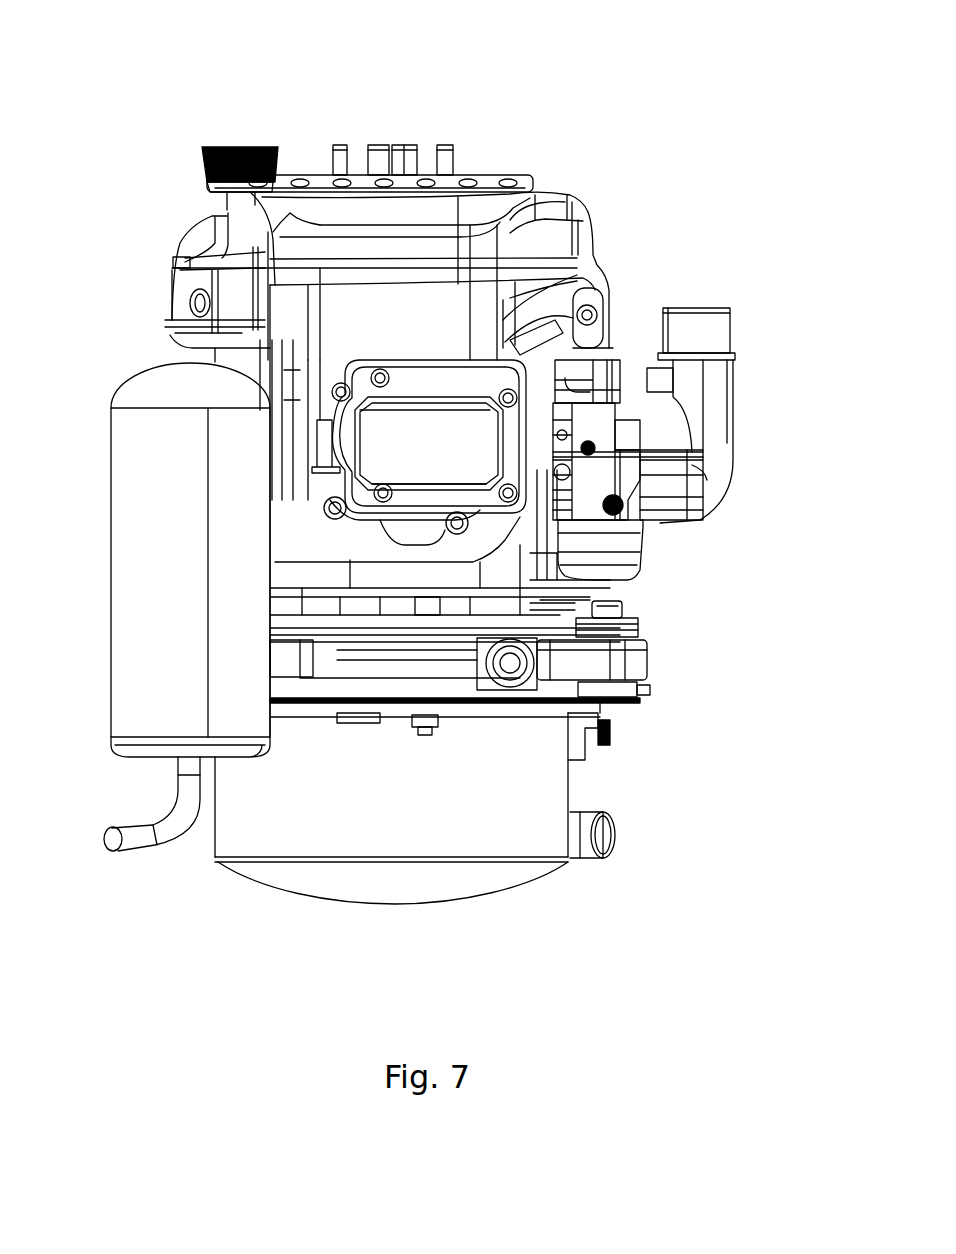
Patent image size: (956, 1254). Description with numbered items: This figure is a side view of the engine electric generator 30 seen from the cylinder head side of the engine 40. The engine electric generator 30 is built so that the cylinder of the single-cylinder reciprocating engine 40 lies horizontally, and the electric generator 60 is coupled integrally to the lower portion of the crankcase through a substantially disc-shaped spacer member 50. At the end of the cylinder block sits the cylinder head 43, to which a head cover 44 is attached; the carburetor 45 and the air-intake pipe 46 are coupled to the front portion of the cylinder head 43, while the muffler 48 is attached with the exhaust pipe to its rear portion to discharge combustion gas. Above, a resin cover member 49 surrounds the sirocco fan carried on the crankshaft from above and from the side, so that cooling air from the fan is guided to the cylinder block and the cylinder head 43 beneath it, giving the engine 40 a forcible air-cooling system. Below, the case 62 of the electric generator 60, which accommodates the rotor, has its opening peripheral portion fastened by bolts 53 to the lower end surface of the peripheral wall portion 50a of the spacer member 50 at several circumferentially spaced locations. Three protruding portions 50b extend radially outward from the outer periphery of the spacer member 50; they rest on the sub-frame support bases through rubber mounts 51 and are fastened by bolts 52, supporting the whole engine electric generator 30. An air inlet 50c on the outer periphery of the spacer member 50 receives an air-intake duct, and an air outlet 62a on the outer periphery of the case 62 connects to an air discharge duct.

The engine electric generator 30 is at (203, 113).
The engine 40 is at (218, 352).
The cylinder head 43 is at (313, 535).
The head cover 44 is at (457, 430).
The carburetor 45 is at (637, 537).
The air-intake pipe 46 is at (718, 330).
The muffler 48 is at (135, 486).
The cover member 49 is at (475, 203).
The spacer member 50 is at (376, 665).
The peripheral wall portion 50a is at (418, 668).
The protruding portions 50b is at (633, 665).
The air inlet 50c is at (520, 665).
The rubber mounts 51 is at (628, 627).
The bolts 52 is at (623, 602).
The bolts 53 is at (424, 730).
The electric generator 60 is at (256, 875).
The case 62 is at (390, 897).
The air outlet 62a is at (602, 834).